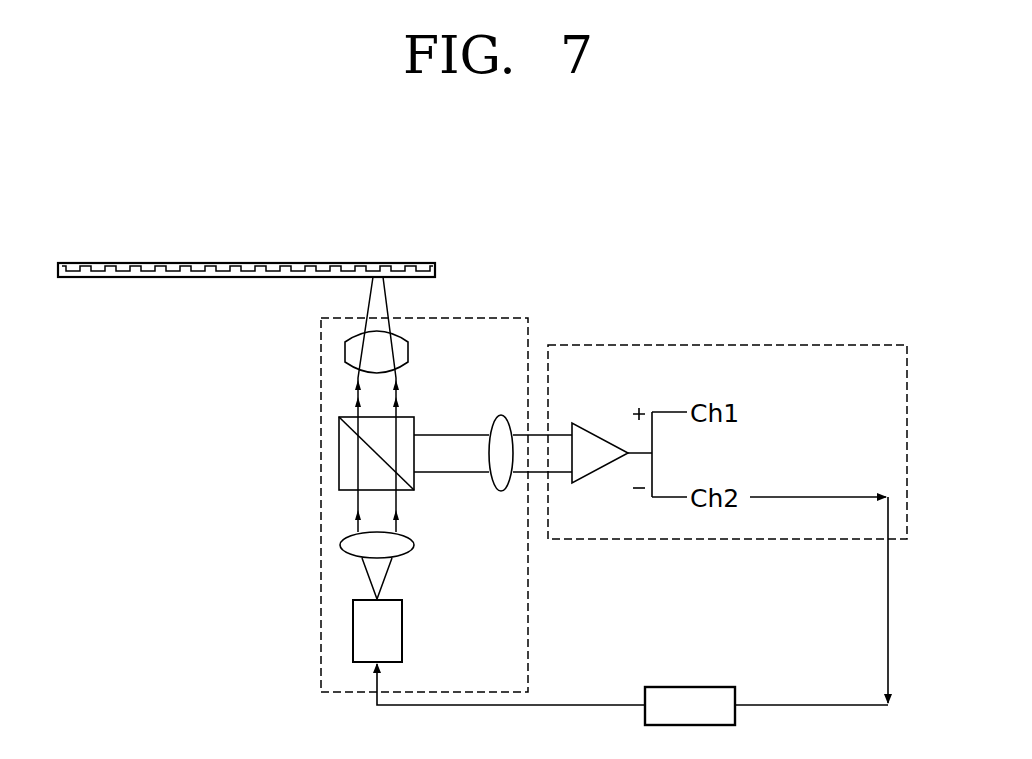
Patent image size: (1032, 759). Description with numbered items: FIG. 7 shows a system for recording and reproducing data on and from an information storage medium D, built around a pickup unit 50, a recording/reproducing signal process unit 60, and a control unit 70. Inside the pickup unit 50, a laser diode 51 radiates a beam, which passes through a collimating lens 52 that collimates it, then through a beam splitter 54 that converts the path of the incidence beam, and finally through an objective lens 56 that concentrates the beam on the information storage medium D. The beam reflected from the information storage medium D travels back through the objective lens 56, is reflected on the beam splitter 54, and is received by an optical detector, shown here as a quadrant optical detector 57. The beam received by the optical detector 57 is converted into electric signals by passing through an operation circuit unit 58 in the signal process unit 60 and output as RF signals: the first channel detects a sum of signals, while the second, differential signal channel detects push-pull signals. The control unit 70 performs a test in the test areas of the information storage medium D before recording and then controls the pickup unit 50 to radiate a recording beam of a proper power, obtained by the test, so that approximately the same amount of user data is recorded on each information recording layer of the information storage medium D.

The information storage medium D is at (235, 254).
The pickup unit 50 is at (316, 675).
The laser diode 51 is at (353, 624).
The collimating lens 52 is at (340, 545).
The beam splitter 54 is at (339, 448).
The objective lens 56 is at (345, 348).
The quadrant optical detector 57 is at (502, 415).
The operation circuit unit 58 is at (598, 432).
The recording/reproducing signal process unit 60 is at (684, 333).
The control unit 70 is at (708, 687).